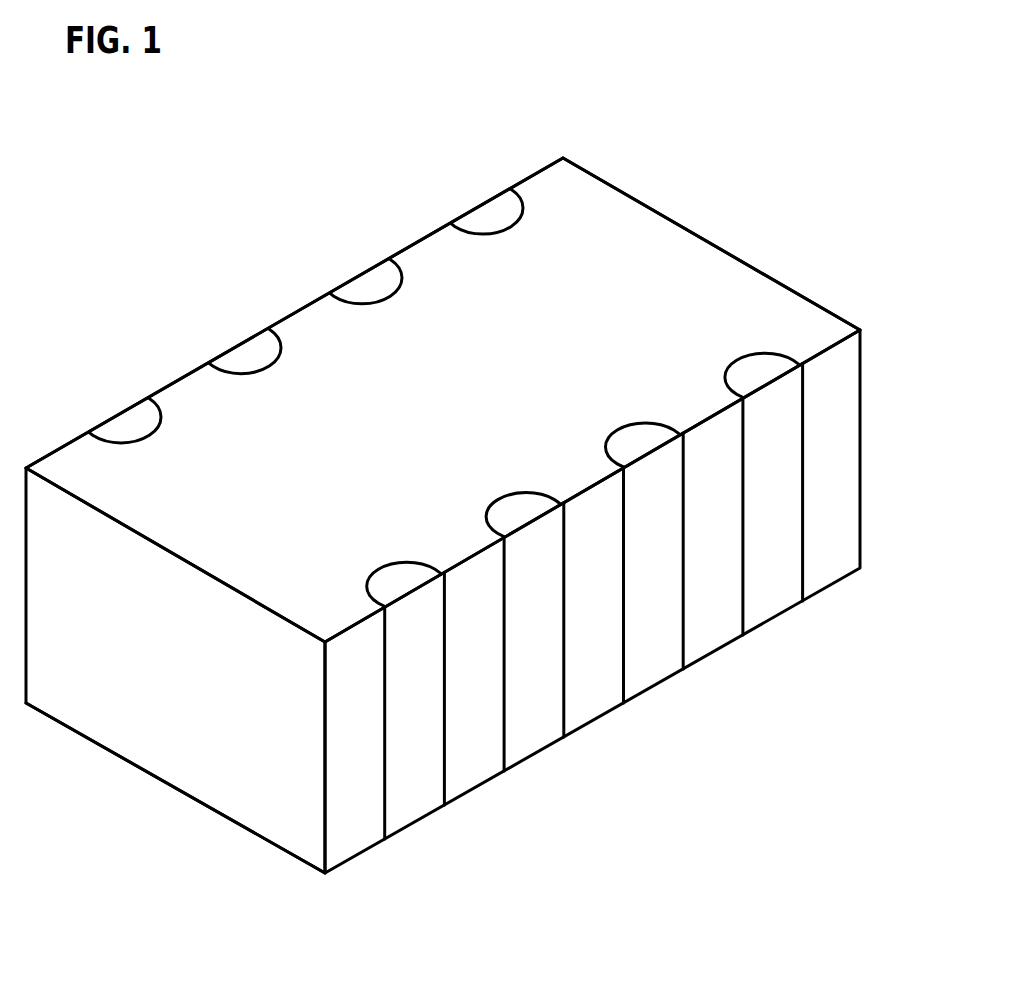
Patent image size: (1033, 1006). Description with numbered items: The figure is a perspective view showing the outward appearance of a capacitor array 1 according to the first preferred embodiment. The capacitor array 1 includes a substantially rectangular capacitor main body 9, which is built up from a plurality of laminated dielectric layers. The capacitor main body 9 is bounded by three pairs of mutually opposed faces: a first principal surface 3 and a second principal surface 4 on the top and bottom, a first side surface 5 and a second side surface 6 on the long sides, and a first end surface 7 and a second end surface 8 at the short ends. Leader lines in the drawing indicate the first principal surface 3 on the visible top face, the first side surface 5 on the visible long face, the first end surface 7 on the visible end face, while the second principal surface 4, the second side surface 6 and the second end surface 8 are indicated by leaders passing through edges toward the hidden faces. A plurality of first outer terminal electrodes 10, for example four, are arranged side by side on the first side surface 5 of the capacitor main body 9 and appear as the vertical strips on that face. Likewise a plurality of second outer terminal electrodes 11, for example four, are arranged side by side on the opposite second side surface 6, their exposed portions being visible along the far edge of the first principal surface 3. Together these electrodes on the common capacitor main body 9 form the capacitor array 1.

The capacitor array 1 is at (88, 175).
The first principal surface 3 is at (683, 248).
The second principal surface 4 is at (235, 793).
The first side surface 5 is at (597, 708).
The second side surface 6 is at (183, 405).
The first end surface 7 is at (118, 757).
The second end surface 8 is at (763, 302).
The capacitor main body 9 is at (619, 183).
The first outer terminal electrodes 10 is at (417, 803).
The second outer terminal electrodes 11 is at (365, 282).